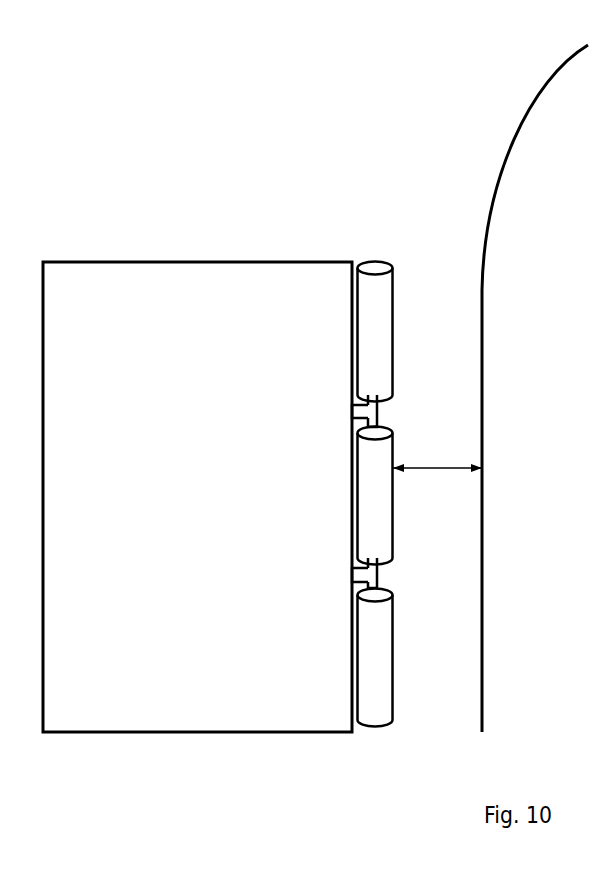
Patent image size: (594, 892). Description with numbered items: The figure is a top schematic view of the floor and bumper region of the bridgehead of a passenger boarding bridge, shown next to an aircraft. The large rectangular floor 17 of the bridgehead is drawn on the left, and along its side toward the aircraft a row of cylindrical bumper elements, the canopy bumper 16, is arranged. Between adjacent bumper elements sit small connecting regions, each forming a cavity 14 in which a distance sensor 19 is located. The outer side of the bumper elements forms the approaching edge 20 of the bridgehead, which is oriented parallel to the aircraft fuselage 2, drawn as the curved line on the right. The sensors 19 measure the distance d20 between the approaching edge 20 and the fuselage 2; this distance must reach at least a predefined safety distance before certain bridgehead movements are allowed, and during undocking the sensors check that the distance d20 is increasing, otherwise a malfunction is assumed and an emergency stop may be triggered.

The aircraft fuselage 2 is at (482, 228).
The cavity 14 is at (380, 398).
The canopy bumper 16 is at (401, 494).
The floor 17 is at (219, 534).
The distance sensor 19 is at (378, 413).
The approaching edge 20 is at (393, 292).
The distance between approaching edge and fuselage d20 is at (443, 463).